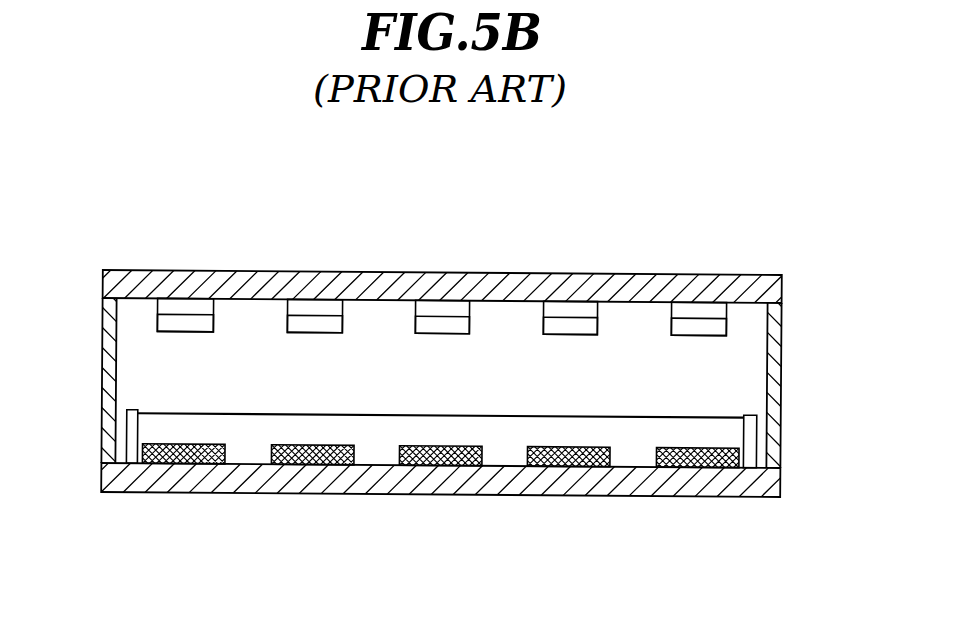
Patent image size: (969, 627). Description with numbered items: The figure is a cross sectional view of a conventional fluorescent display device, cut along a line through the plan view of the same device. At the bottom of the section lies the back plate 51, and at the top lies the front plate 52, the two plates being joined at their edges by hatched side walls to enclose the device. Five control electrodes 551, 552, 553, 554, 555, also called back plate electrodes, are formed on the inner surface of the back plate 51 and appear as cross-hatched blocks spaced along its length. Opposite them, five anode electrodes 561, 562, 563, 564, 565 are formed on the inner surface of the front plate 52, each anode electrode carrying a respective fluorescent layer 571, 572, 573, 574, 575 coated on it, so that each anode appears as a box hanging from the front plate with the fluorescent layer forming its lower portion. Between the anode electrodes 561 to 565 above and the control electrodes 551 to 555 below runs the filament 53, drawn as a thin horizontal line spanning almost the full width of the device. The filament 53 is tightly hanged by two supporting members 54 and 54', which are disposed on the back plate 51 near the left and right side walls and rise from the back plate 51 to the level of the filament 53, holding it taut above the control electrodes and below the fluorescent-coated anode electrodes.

The back plate 51 is at (739, 492).
The front plate 52 is at (764, 278).
The filament 53 is at (729, 414).
The supporting member 54 is at (78, 436).
The supporting member 54' is at (792, 441).
The control electrode 551 is at (179, 460).
The control electrode 552 is at (308, 458).
The control electrode 553 is at (442, 460).
The control electrode 554 is at (567, 462).
The control electrode 555 is at (695, 462).
The anode electrode 561 is at (170, 305).
The anode electrode 562 is at (300, 305).
The anode electrode 563 is at (427, 305).
The anode electrode 564 is at (556, 305).
The anode electrode 565 is at (685, 305).
The fluorescent layer 571 is at (203, 321).
The fluorescent layer 572 is at (331, 320).
The fluorescent layer 573 is at (458, 320).
The fluorescent layer 574 is at (587, 320).
The fluorescent layer 575 is at (717, 320).